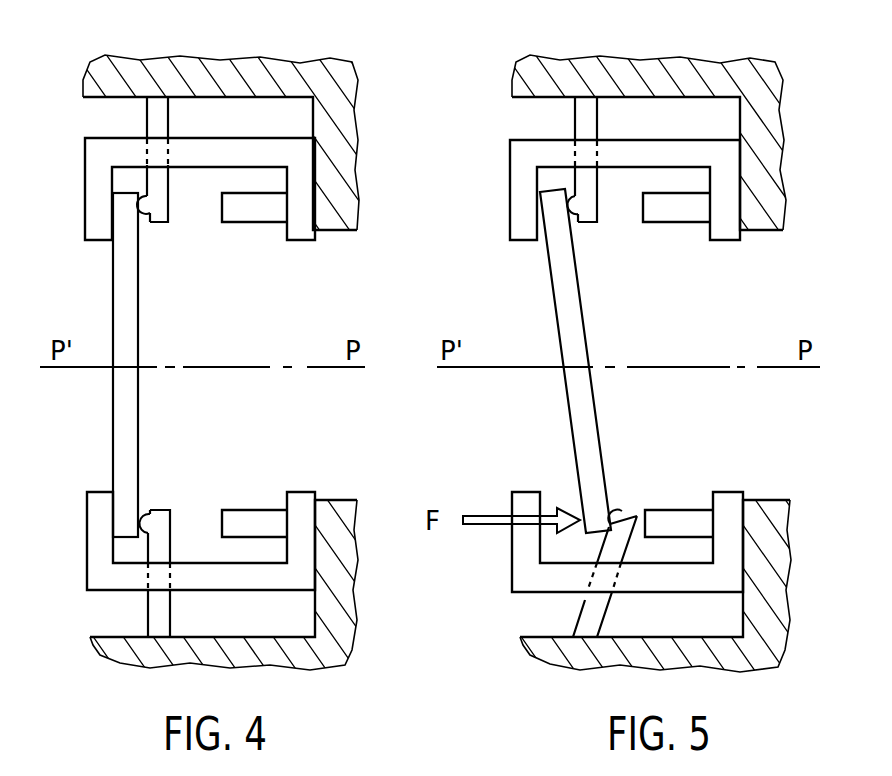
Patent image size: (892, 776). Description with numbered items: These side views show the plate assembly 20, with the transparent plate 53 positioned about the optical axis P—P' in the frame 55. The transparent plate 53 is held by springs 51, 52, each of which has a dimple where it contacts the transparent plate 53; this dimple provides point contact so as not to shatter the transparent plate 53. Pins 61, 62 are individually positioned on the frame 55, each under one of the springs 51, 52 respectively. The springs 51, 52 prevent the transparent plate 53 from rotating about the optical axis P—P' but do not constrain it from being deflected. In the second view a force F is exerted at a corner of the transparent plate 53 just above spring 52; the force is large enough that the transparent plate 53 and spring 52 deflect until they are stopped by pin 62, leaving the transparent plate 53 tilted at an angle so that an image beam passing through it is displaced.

In FIG. 4, the plate assembly 20 is at (358, 80).
In FIG. 5, the plate assembly 20 is at (758, 64).
In FIG. 4, the spring 51 is at (147, 117).
In FIG. 5, the spring 51 is at (575, 113).
In FIG. 4, the spring 52 is at (148, 610).
In FIG. 5, the spring 52 is at (577, 615).
In FIG. 4, the transparent plate 53 is at (113, 448).
In FIG. 5, the transparent plate 53 is at (571, 428).
In FIG. 4, the frame 55 is at (93, 534).
In FIG. 5, the frame 55 is at (512, 558).
In FIG. 4, the pin 61 is at (253, 223).
In FIG. 5, the pin 61 is at (673, 223).
In FIG. 4, the pin 62 is at (252, 498).
In FIG. 5, the pin 62 is at (675, 498).